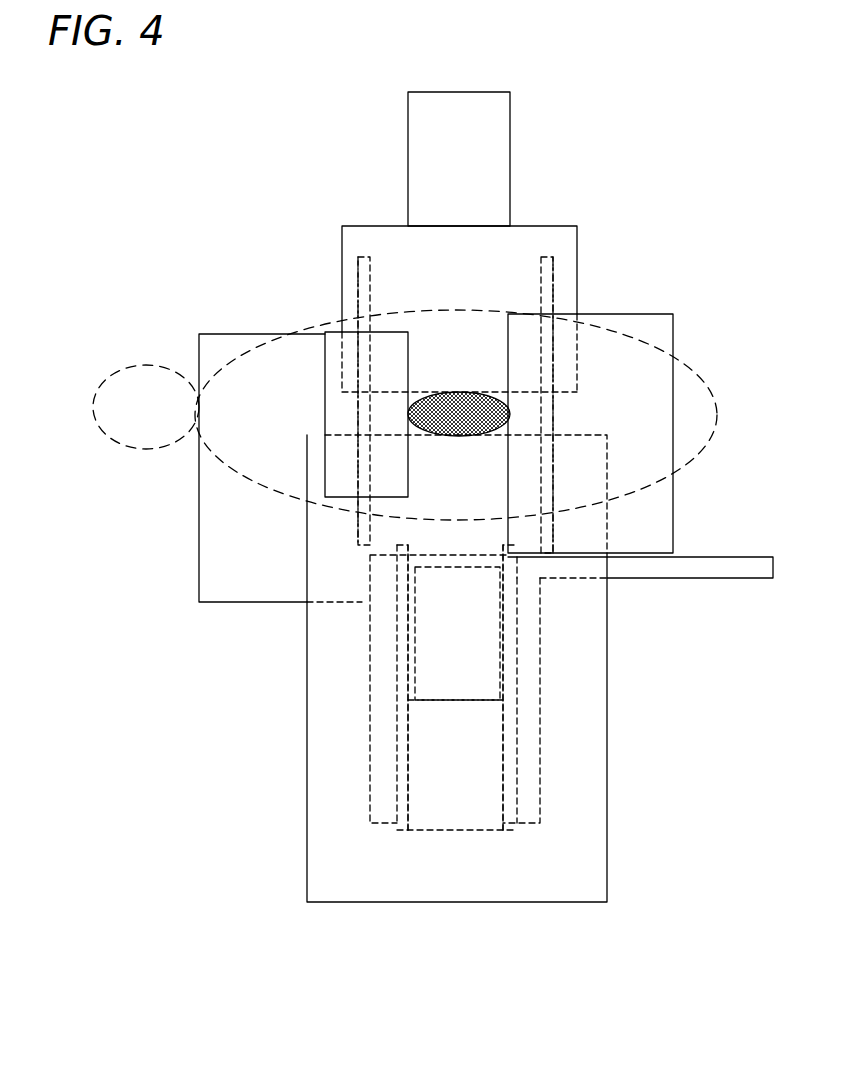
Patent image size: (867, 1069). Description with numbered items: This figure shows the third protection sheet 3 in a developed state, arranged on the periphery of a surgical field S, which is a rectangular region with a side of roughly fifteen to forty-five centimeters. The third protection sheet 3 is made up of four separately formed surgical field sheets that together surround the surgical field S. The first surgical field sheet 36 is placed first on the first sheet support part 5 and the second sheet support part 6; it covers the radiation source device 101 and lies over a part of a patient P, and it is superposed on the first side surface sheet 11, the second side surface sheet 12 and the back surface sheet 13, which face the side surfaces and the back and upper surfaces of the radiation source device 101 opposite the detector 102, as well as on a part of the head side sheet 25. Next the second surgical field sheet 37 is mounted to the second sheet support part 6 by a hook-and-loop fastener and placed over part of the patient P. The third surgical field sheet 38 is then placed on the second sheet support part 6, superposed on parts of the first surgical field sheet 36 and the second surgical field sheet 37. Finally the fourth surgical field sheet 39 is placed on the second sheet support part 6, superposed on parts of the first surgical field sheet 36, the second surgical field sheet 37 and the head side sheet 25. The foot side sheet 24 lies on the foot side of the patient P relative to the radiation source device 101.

The third protection sheet 3 is at (665, 247).
The first sheet support part 5 is at (397, 810).
The second sheet support part 6 is at (362, 282).
The first side surface sheet 11 is at (380, 693).
The second side surface sheet 12 is at (528, 695).
The back surface sheet 13 is at (457, 765).
The foot side sheet 24 is at (693, 570).
The head side sheet 25 is at (280, 468).
The first surgical field sheet 36 is at (457, 668).
The second surgical field sheet 37 is at (459, 309).
The third surgical field sheet 38 is at (590, 433).
The fourth surgical field sheet 39 is at (366, 414).
The radiation source device 101 is at (457, 633).
The detector 102 is at (459, 159).
The patient P is at (693, 367).
The surgical field S is at (457, 393).